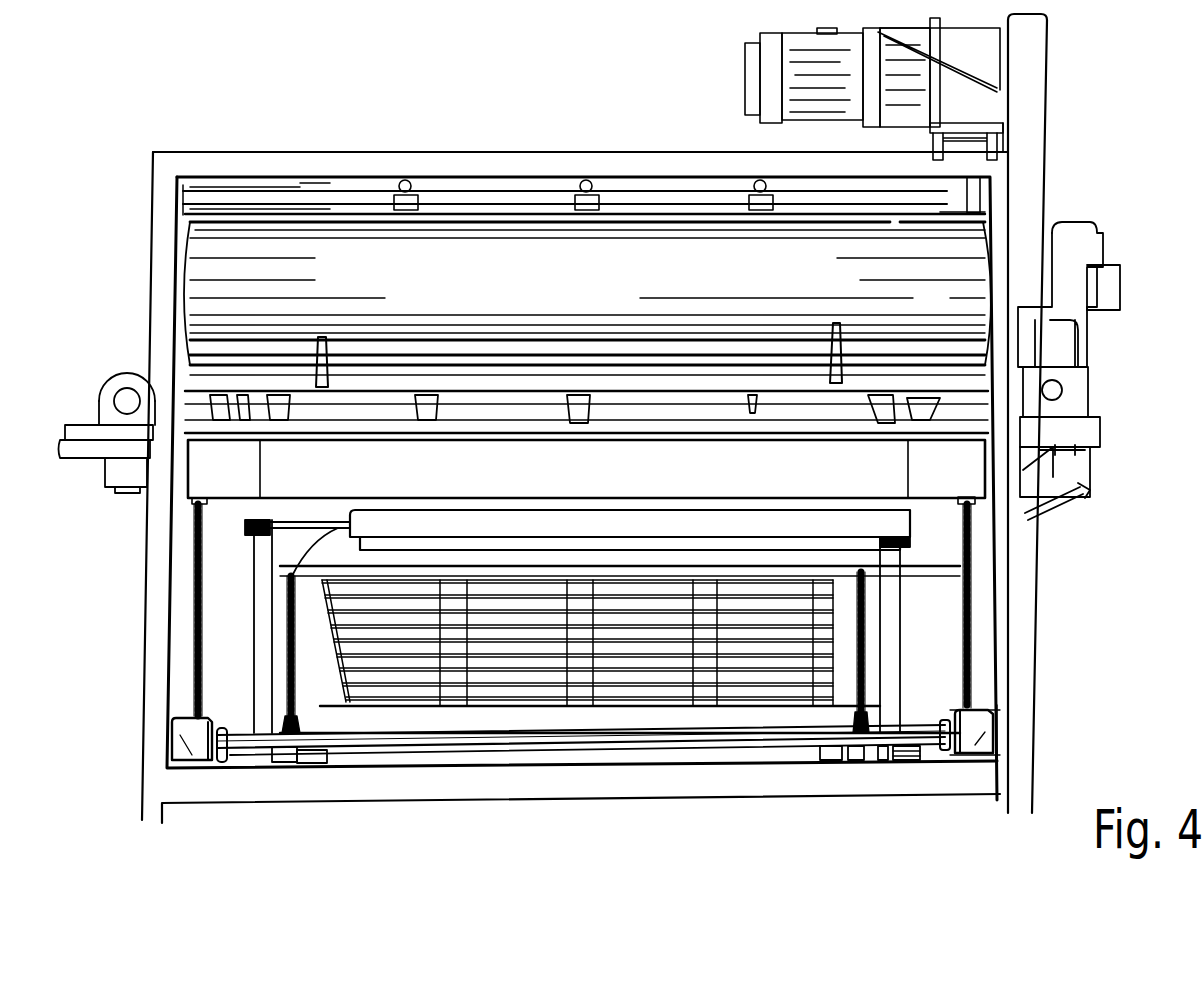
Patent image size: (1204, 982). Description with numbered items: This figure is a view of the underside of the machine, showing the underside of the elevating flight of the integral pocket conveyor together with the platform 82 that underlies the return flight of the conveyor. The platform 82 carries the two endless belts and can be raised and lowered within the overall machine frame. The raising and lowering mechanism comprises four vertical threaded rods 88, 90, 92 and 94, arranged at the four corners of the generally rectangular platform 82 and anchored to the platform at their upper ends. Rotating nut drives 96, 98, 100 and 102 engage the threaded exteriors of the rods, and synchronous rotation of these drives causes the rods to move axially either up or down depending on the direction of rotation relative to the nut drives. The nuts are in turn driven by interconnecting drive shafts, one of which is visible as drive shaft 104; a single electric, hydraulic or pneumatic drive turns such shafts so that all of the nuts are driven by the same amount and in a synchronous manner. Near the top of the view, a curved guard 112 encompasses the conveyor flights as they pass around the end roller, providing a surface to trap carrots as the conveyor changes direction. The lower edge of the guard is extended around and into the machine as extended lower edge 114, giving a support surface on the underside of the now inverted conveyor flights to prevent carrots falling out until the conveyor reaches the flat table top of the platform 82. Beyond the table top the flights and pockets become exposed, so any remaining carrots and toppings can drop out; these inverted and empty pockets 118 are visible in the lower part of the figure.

The platform 82 is at (435, 479).
The vertical threaded rod 88 is at (197, 587).
The vertical threaded rod 90 is at (968, 558).
The vertical threaded rod 92 is at (863, 632).
The vertical threaded rod 94 is at (288, 652).
The rotating nut drive 96 is at (195, 762).
The rotating nut drive 98 is at (978, 736).
The rotating nut drive 100 is at (858, 764).
The rotating nut drive 102 is at (305, 766).
The interconnecting drive shaft 104 is at (466, 750).
The curved guard 112 is at (604, 283).
The extended lower edge of the guard 114 is at (283, 369).
The inverted and empty pockets 118 is at (520, 672).